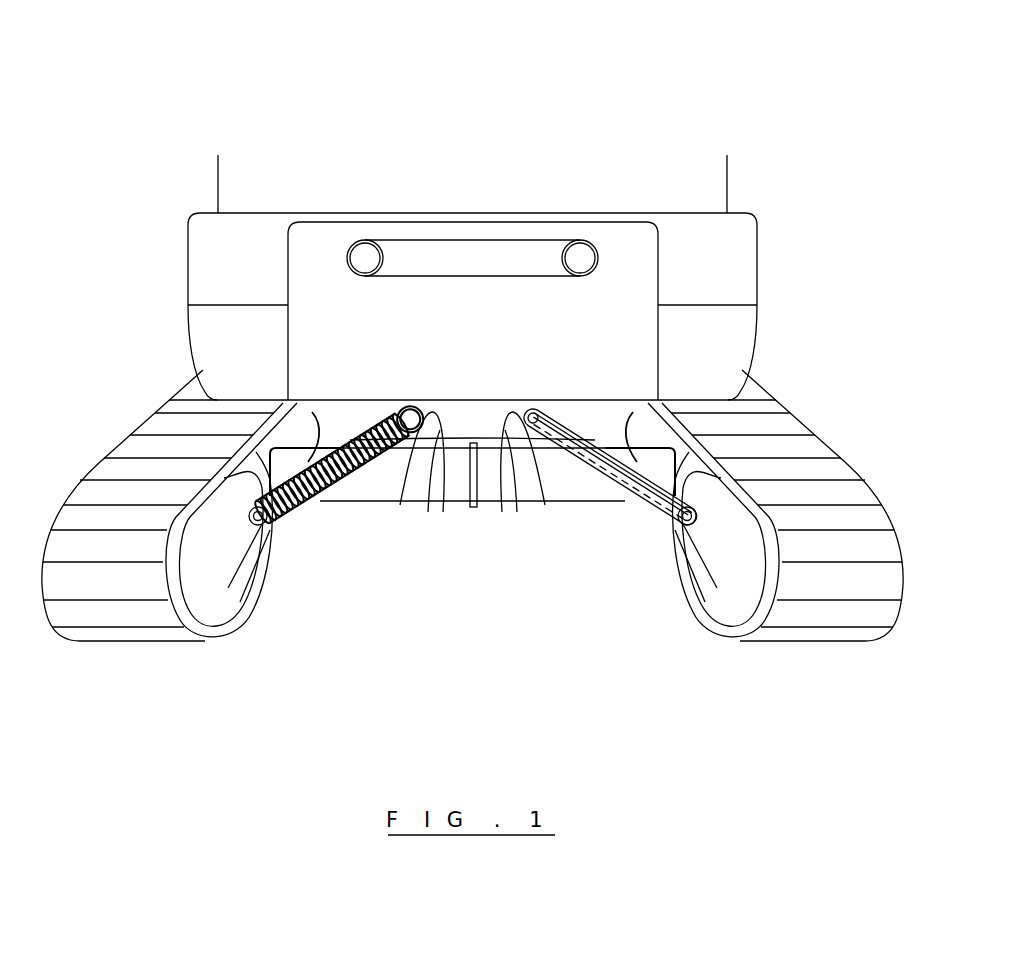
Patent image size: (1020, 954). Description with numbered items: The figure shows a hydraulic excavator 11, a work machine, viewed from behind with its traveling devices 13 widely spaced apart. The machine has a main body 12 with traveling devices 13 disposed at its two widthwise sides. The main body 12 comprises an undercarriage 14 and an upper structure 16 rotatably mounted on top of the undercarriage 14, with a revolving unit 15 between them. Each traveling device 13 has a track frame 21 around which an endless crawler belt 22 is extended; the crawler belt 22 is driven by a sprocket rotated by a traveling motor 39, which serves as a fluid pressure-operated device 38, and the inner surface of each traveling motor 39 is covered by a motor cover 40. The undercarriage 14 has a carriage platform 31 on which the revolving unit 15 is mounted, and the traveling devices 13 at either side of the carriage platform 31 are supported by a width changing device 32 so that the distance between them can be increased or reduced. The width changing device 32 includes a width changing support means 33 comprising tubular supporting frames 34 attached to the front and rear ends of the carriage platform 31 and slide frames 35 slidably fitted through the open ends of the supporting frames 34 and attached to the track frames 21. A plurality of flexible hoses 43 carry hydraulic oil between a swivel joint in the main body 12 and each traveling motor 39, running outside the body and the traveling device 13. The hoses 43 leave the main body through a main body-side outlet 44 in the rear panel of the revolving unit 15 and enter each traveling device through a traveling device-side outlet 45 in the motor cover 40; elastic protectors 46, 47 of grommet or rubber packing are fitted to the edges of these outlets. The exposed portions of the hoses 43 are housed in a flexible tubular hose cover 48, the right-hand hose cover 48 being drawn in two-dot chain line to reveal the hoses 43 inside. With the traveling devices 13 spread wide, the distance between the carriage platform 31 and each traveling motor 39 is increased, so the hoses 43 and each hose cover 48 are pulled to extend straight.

The hydraulic excavator 11 is at (472, 62).
The main body 12 is at (746, 211).
The traveling device 13 is at (103, 643).
The undercarriage 14 is at (810, 411).
The revolving unit 15 is at (473, 410).
The upper structure 16 is at (749, 320).
The track frame 21 is at (265, 425).
The crawler belt 22 is at (125, 462).
The carriage platform 31 is at (568, 428).
The width changing device 32 is at (472, 511).
The width changing support means 33 is at (298, 440).
The supporting frame 34 is at (568, 492).
The slide frame 35 is at (338, 428).
The fluid pressure-operated device 38 is at (193, 606).
The traveling motor 39 is at (207, 595).
The motor cover 40 is at (228, 590).
The flexible hose 43 is at (265, 512).
The main body-side outlet 44 is at (418, 468).
The traveling device-side outlet 45 is at (262, 528).
The elastic protector 46 is at (440, 480).
The elastic protector 47 is at (250, 565).
The hose cover 48 is at (352, 490).